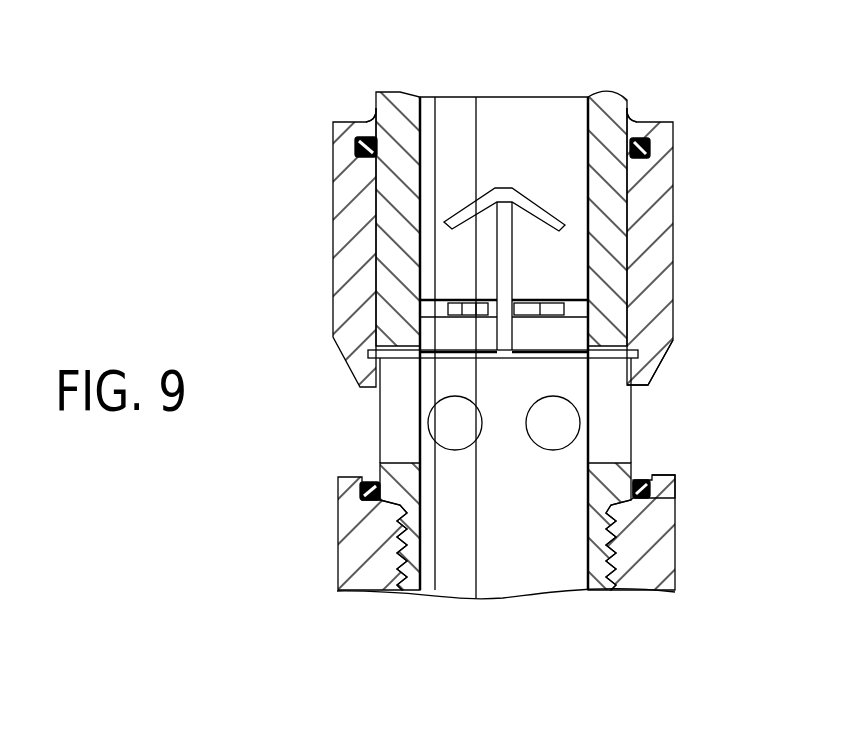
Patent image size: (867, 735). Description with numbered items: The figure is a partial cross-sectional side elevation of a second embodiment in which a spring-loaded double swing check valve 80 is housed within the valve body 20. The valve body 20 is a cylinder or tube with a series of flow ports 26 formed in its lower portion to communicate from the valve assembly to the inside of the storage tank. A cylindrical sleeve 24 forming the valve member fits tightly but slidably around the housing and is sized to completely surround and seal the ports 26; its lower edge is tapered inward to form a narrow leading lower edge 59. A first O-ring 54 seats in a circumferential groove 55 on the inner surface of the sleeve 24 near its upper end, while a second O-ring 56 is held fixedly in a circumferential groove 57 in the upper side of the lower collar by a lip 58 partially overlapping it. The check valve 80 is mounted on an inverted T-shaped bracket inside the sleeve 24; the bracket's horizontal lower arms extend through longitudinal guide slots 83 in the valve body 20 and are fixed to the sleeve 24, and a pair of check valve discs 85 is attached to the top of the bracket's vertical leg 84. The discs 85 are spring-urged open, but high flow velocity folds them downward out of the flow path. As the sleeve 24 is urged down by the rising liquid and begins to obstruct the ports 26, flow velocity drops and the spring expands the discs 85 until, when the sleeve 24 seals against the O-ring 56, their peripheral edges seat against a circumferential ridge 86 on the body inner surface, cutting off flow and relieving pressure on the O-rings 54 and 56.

The valve body 20 is at (376, 110).
The cylindrical sleeve 24 is at (673, 296).
The flow ports 26 is at (545, 445).
The first O-ring 54 is at (370, 158).
The circumferential groove 55 is at (378, 115).
The second O-ring 56 is at (650, 530).
The circumferential groove 57 is at (650, 500).
The lip 58 is at (650, 474).
The lower edge 59 is at (658, 398).
The spring-loaded double swing check valve 80 is at (443, 200).
The longitudinal guide slots 83 is at (392, 422).
The vertical leg 84 is at (497, 270).
The check valve discs 85 is at (463, 210).
The circumferential ridge 86 is at (570, 298).